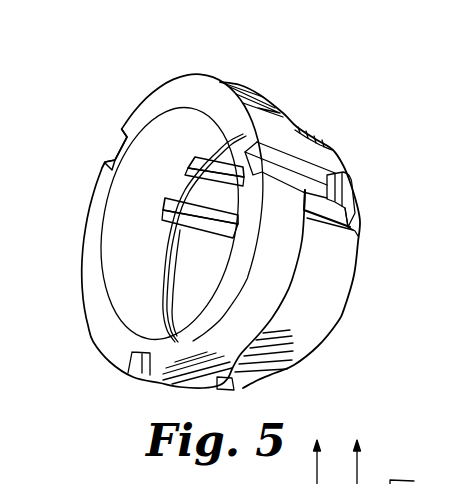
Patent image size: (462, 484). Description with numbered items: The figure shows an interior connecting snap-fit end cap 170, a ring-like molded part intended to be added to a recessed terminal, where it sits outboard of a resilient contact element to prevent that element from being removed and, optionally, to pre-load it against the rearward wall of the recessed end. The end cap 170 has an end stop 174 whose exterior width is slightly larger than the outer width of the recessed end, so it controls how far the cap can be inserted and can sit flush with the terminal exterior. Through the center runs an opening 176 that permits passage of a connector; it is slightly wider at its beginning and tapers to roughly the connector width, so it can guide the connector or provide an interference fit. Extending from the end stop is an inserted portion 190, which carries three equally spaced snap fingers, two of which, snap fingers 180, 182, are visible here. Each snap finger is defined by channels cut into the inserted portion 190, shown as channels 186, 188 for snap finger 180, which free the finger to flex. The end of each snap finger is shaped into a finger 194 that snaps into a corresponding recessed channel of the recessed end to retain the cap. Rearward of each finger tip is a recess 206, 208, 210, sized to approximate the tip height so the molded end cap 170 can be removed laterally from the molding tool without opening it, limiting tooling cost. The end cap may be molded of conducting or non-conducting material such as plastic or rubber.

The snap-fit end cap 170 is at (247, 216).
The end stop 174 is at (243, 87).
The opening 176 is at (120, 243).
The snap finger 180 is at (368, 212).
The snap finger 182 is at (215, 187).
The channel 186 is at (353, 183).
The channel 188 is at (364, 235).
The inserted portion 190 is at (303, 123).
The finger 194 is at (349, 175).
The recess 206 is at (142, 375).
The recess 208 is at (113, 148).
The recess 210 is at (273, 163).